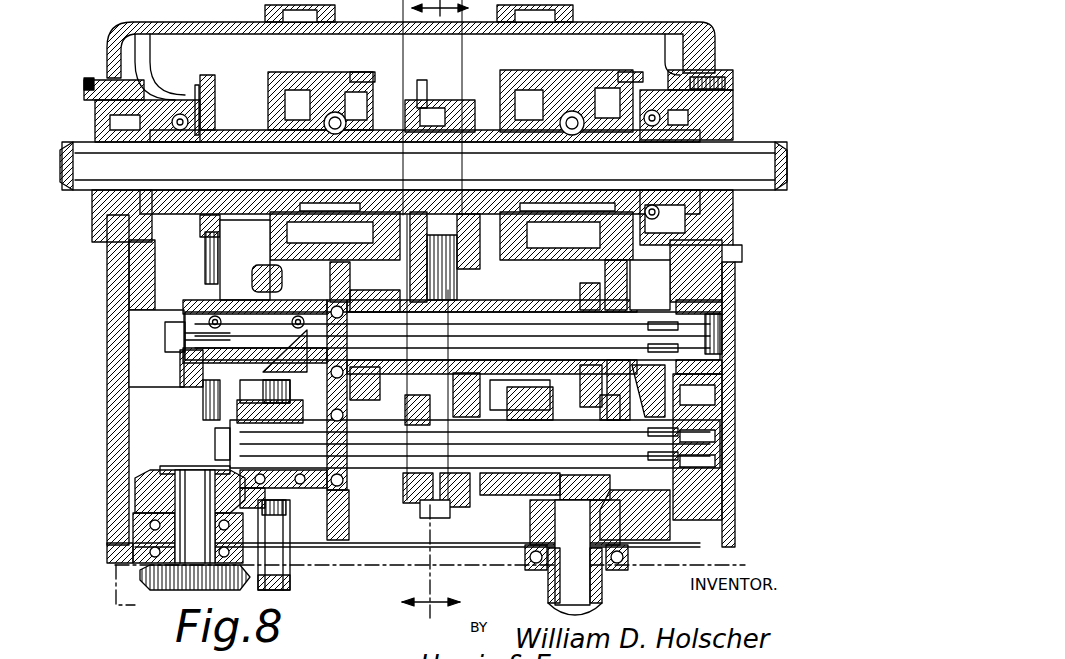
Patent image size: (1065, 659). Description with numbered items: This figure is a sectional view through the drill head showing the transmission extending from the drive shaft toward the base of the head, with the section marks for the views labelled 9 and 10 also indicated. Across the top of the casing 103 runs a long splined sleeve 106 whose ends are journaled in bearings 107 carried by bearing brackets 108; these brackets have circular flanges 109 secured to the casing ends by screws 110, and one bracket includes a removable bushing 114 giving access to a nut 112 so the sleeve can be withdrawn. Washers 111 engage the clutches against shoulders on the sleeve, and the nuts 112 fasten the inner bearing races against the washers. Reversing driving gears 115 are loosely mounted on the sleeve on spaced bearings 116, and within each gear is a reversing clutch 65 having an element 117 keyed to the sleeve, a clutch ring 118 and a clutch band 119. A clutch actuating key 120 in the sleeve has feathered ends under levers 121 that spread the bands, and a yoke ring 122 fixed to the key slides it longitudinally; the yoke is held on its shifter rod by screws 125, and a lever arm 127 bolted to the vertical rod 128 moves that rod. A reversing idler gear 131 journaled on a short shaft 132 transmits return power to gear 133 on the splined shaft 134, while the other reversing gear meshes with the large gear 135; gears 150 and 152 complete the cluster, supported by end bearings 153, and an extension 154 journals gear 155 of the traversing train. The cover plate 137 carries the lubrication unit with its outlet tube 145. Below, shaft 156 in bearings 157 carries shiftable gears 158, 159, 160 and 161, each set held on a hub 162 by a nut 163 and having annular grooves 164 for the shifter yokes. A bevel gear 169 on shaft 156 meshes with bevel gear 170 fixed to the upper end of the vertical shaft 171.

The casing 103 is at (258, 22).
The outlet tube 145 is at (210, 75).
The washer 111 is at (197, 100).
The bearing 116 is at (280, 100).
The reversing clutch 65 is at (340, 78).
The reversing driving gear 115 is at (372, 78).
The splined sleeve 106 is at (425, 108).
The screw 110 is at (90, 84).
The removable bushing 114 is at (100, 128).
The clutch actuating key 120 is at (480, 150).
The lever 121 is at (568, 170).
The yoke ring 122 is at (440, 120).
The bearing 107 is at (705, 100).
The nut 112 is at (700, 115).
The bearing bracket 108 is at (735, 242).
The circular flange 109 is at (742, 258).
The clutch element 117 is at (270, 235).
The lever arm 127 is at (215, 290).
The screw 125 is at (462, 240).
The short shaft 132 is at (440, 262).
The clutch band 119 is at (572, 271).
The clutch ring 118 is at (537, 287).
The large gear 135 is at (195, 424).
The reversing idler gear 131 is at (417, 305).
The gear 150 is at (580, 320).
The shaft extension 154 is at (205, 395).
The gear 133 is at (380, 341).
The gear 152 is at (437, 341).
The splined shaft 134 is at (525, 325).
The gear 155 is at (722, 352).
The end bearing 153 is at (381, 383).
The shiftable gear 160 is at (520, 395).
The annular groove 164 is at (404, 510).
The cover plate 137 is at (722, 410).
The shaft 156 is at (467, 444).
The nut 163 is at (539, 448).
The hub 162 is at (470, 528).
The shiftable gear 159 is at (591, 487).
The bevel gear 169 is at (622, 498).
The shiftable gear 158 is at (382, 523).
The shiftable gear 161 is at (430, 515).
The bearing 157 is at (330, 512).
The bevel gear 170 is at (650, 525).
The vertical shaft 171 is at (600, 590).
The vertical rod 128 is at (292, 578).
The section line 10 is at (398, 610).
The section line 9 is at (467, 610).